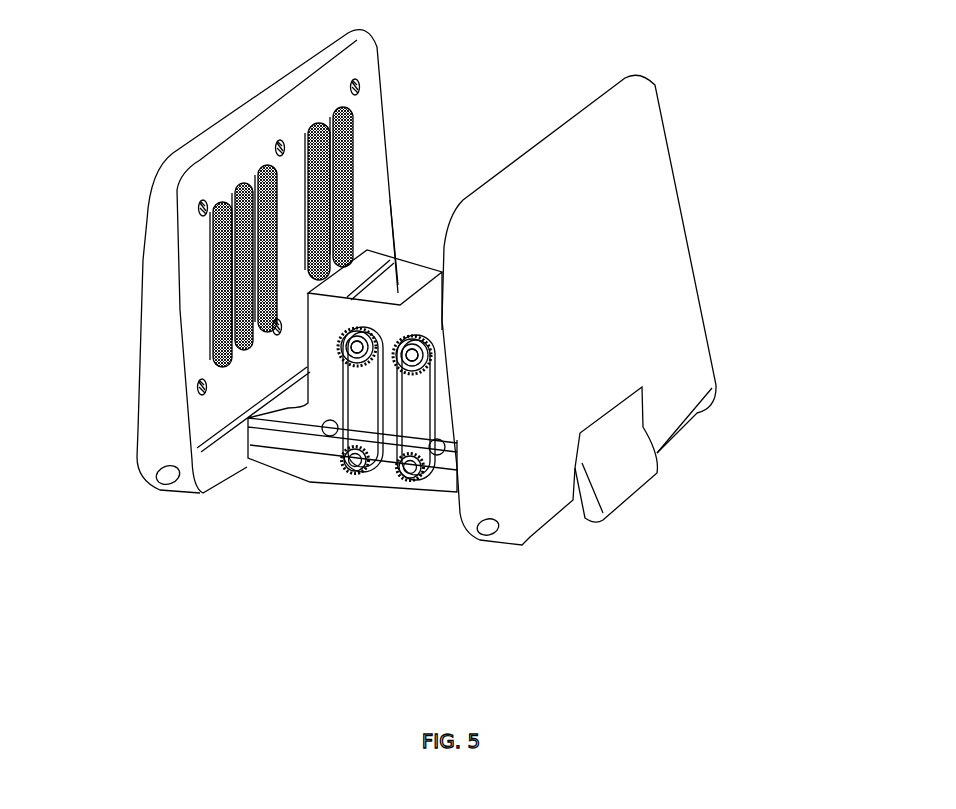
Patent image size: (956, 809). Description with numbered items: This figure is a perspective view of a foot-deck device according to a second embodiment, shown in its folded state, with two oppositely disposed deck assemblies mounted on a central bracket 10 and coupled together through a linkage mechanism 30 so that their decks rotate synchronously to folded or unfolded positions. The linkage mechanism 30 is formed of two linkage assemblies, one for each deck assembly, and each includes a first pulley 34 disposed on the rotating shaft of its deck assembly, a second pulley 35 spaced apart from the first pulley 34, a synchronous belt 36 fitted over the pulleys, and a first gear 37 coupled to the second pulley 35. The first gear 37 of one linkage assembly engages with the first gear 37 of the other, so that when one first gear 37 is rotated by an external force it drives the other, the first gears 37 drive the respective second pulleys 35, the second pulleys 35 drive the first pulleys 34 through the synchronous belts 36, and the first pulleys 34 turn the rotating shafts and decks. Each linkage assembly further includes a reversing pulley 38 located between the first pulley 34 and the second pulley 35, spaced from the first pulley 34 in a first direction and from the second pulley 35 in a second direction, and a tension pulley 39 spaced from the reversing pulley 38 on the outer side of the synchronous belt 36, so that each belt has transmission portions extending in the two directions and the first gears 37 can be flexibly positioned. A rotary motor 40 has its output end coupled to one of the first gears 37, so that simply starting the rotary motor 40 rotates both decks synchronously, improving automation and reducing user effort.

The bracket 10 is at (352, 280).
The linkage mechanism 30 is at (448, 323).
The first pulley 34 is at (250, 440).
The second pulley 35 is at (355, 343).
The synchronous belt 36 is at (347, 383).
The first gear 37 is at (347, 323).
The reversing pulley 38 is at (355, 460).
The tension pulley 39 is at (330, 436).
The rotary motor 40 is at (407, 280).